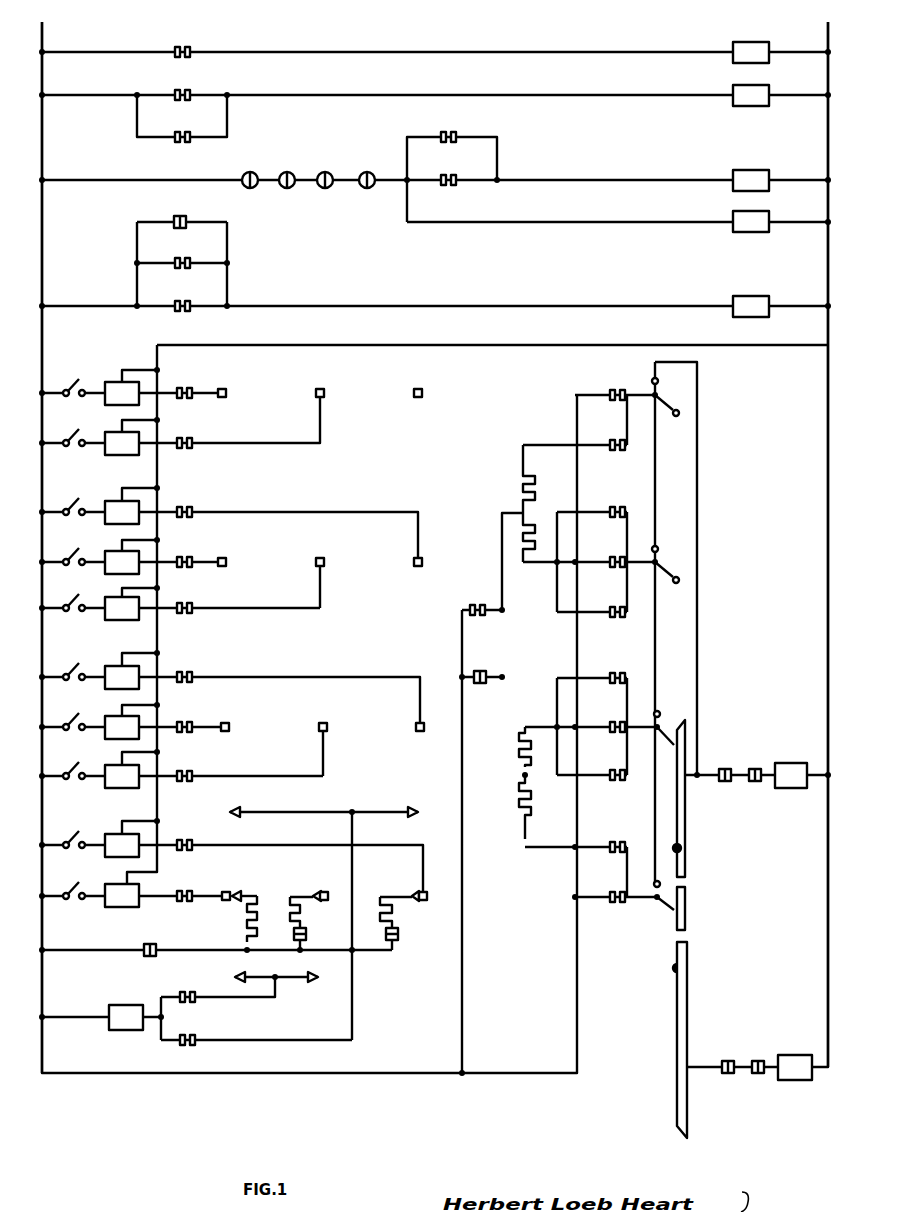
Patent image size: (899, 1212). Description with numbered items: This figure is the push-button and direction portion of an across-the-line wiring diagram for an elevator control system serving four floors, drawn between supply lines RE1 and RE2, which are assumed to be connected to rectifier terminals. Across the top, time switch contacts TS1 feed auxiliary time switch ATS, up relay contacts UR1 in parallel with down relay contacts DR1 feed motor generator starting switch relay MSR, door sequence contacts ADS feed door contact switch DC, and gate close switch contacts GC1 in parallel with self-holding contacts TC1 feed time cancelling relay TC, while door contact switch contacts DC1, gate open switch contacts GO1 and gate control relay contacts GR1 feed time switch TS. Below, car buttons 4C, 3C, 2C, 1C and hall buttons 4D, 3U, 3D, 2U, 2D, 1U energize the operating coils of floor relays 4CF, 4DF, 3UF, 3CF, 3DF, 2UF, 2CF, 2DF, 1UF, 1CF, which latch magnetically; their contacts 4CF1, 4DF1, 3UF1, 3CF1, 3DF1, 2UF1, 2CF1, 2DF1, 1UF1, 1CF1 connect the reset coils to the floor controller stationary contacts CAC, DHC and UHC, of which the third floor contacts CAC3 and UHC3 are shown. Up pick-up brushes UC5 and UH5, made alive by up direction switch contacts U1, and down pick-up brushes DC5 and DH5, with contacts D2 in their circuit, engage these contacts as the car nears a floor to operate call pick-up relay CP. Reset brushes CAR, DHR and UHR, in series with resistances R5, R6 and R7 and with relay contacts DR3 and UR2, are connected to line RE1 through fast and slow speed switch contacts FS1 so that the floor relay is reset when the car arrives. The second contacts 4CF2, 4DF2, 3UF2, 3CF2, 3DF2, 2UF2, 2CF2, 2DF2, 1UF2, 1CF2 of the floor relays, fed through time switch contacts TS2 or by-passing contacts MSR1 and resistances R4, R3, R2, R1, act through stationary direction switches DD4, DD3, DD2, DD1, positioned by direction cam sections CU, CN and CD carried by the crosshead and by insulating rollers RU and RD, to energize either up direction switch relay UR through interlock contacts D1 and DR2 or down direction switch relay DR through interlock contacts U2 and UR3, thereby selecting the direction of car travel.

The supply line RE1 is at (42, 537).
The supply line RE2 is at (826, 534).
The time switch contacts TS1 is at (184, 44).
The auxiliary time switch ATS is at (751, 52).
The up direction switch relay contacts UR1 is at (184, 88).
The motor generator starting switch relay MSR is at (751, 95).
The down direction switch relay contacts DR1 is at (184, 132).
The door sequence contacts ADS is at (331, 171).
The gate close switch contacts GC1 is at (450, 127).
The time cancelling relay contacts TC1 is at (449, 169).
The time cancelling relay TC is at (751, 180).
The door contact switch DC is at (751, 221).
The door contact switch contacts DC1 is at (181, 211).
The gate open switch contacts GO1 is at (181, 252).
The gate control relay contacts GR1 is at (181, 295).
The time switch TS is at (751, 306).
The fourth floor car button 4C is at (74, 379).
The fourth floor car button floor relay 4CF is at (122, 393).
The fourth floor car relay contacts 4CF1 is at (179, 382).
The car button stationary contacts CAC is at (237, 381).
The down hall button stationary contacts DHC is at (335, 381).
The up hall button stationary contacts UHC is at (429, 381).
The fourth floor hall button 4D is at (75, 429).
The down fourth floor relay 4DF is at (122, 443).
The down fourth floor relay contacts 4DF1 is at (179, 432).
The up third floor hall button 3U is at (75, 498).
The up third floor relay 3UF is at (122, 512).
The up third floor relay contacts 3UF1 is at (179, 501).
The third floor up hall stationary contact UHC3 is at (423, 559).
The third floor car button 3C is at (74, 548).
The third floor car button floor relay 3CF is at (122, 562).
The third floor car relay contacts 3CF1 is at (179, 551).
The third floor car button stationary contact CAC3 is at (268, 550).
The down third floor hall button 3D is at (75, 594).
The down third floor relay 3DF is at (122, 608).
The down third floor relay contacts 3DF1 is at (179, 597).
The up second floor hall button 2U is at (75, 663).
The up second floor relay 2UF is at (122, 677).
The up second floor relay contacts 2UF1 is at (293, 691).
The second floor car button 2C is at (74, 713).
The second floor car button floor relay 2CF is at (122, 727).
The second floor car relay contacts 2CF1 is at (245, 716).
The down second floor hall button 2D is at (75, 762).
The down second floor relay 2DF is at (122, 776).
The down second floor relay contacts 2DF1 is at (179, 765).
The up car call brush UC5 is at (240, 802).
The up hall call brush UH5 is at (417, 802).
The first floor hall button 1U is at (75, 831).
The up first floor relay 1UF is at (122, 845).
The up first floor relay contacts 1UF1 is at (179, 834).
The first floor car button 1C is at (74, 882).
The first floor car button floor relay 1CF is at (122, 895).
The first floor car relay contacts 1CF1 is at (179, 885).
The car call reset brush CAR is at (235, 890).
The resistance R5 is at (247, 915).
The resistance R6 is at (290, 897).
The down hall reset brush DHR is at (316, 890).
The down direction switch relay contacts DR3 is at (306, 934).
The resistance R7 is at (380, 897).
The up hall reset brush UHR is at (421, 890).
The up direction switch relay contacts UR2 is at (398, 934).
The fast and slow speed switch contacts FS1 is at (150, 938).
The call pick-up relay CP is at (126, 1017).
The down direction switch contacts D2 is at (189, 986).
The up direction switch contacts U1 is at (191, 1029).
The down car call brush DC5 is at (251, 969).
The down hall call brush DH5 is at (320, 969).
The motor generator starting switch relay contacts MSR1 is at (471, 600).
The time switch contacts TS2 is at (481, 666).
The resistance R4 is at (535, 487).
The resistance R3 is at (535, 535).
The resistance R2 is at (531, 758).
The resistance R1 is at (531, 813).
The fourth floor car relay contacts 4CF2 is at (617, 383).
The down fourth floor relay contacts 4DF2 is at (615, 442).
The up third floor relay contacts 3UF2 is at (607, 500).
The third floor car relay contacts 3CF2 is at (617, 557).
The down third floor relay contacts 3DF2 is at (617, 607).
The up second floor relay contacts 2UF2 is at (606, 667).
The second floor car relay contacts 2CF2 is at (617, 722).
The down second floor relay contacts 2DF2 is at (617, 770).
The up first floor relay contacts 1UF2 is at (612, 836).
The first floor car relay contacts 1CF2 is at (619, 892).
The fourth floor direction switch DD4 is at (671, 396).
The third floor direction switch DD3 is at (671, 563).
The second floor direction switch DD2 is at (670, 718).
The first floor direction switch DD1 is at (668, 907).
The up direction cam section CU is at (685, 812).
The up insulating roller RU is at (685, 848).
The neutral direction cam section CN is at (685, 920).
The down insulating roller RD is at (685, 968).
The down direction cam section CD is at (687, 1015).
The down direction switch interlock contacts D1 is at (726, 768).
The down direction switch relay interlock contacts DR2 is at (755, 768).
The up direction switch relay UR is at (791, 775).
The up direction switch contacts U2 is at (728, 1060).
The up direction switch relay interlock contacts UR3 is at (758, 1060).
The down direction switch relay DR is at (795, 1067).